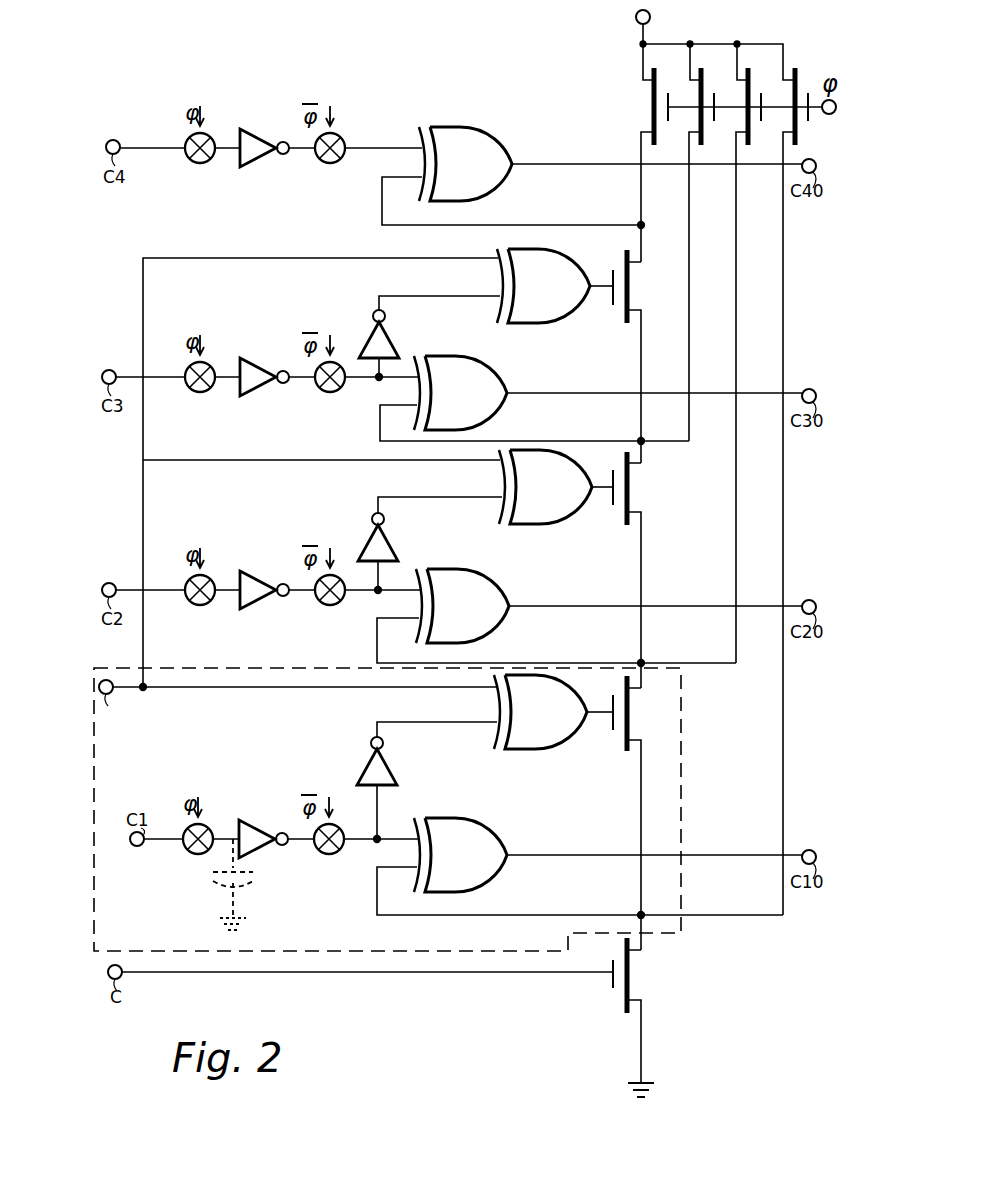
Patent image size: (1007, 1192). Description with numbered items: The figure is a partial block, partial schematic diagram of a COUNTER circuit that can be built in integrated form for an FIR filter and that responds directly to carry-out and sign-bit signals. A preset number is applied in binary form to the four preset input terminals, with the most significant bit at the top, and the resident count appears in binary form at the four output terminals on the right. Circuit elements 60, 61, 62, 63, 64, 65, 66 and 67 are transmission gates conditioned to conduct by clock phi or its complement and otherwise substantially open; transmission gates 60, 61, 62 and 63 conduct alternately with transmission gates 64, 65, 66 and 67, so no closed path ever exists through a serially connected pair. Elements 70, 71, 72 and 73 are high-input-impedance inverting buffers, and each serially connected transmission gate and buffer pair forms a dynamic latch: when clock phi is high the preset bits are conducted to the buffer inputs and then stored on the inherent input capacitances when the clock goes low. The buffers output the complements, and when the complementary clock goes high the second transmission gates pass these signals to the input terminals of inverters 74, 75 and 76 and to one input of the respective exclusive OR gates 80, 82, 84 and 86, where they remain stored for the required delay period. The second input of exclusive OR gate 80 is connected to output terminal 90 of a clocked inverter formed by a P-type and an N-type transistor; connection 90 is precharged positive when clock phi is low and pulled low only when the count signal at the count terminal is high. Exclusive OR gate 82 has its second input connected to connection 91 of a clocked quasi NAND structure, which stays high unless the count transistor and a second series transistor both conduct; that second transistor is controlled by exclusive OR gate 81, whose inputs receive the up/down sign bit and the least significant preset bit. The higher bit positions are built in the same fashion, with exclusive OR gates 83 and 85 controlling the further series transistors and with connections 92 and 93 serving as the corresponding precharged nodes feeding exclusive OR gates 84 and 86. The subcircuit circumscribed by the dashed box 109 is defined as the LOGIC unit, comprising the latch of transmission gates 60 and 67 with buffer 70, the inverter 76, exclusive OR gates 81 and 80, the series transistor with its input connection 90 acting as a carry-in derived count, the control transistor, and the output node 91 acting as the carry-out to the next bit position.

The transmission gate 60 is at (207, 827).
The transmission gate 61 is at (208, 604).
The transmission gate 62 is at (208, 391).
The transmission gate 63 is at (204, 163).
The transmission gate 64 is at (336, 163).
The transmission gate 65 is at (333, 392).
The transmission gate 66 is at (333, 605).
The transmission gate 67 is at (339, 827).
The inverting buffer 70 is at (249, 829).
The inverting buffer 71 is at (250, 608).
The inverting buffer 72 is at (250, 395).
The inverting buffer 73 is at (250, 166).
The inverting buffer 74 is at (392, 338).
The inverting buffer 75 is at (389, 545).
The inverter 76 is at (397, 780).
The exclusive OR gate 80 is at (478, 820).
The exclusive OR gate 81 is at (531, 750).
The exclusive OR gate 82 is at (479, 580).
The exclusive-OR gate 83 is at (560, 520).
The exclusive OR gate 84 is at (495, 417).
The exclusive-OR gate 85 is at (560, 318).
The exclusive OR gate 86 is at (496, 188).
The output terminal of clocked inverter 90 is at (641, 915).
The output node 91 is at (641, 663).
The circuit node 92 is at (641, 441).
The circuit node 93 is at (641, 225).
The box defining LOGIC unit 109 is at (681, 930).